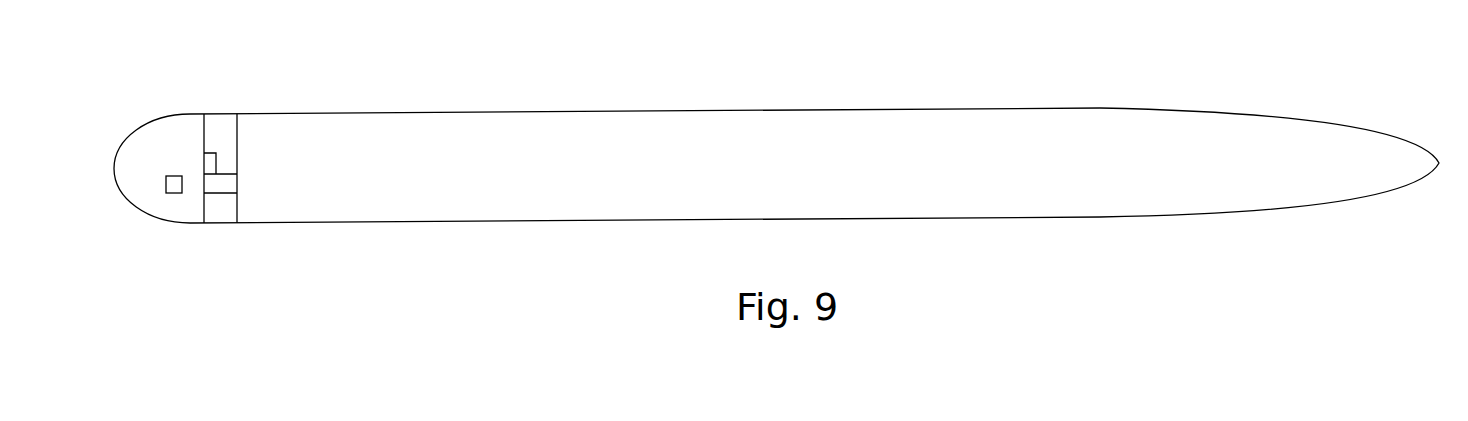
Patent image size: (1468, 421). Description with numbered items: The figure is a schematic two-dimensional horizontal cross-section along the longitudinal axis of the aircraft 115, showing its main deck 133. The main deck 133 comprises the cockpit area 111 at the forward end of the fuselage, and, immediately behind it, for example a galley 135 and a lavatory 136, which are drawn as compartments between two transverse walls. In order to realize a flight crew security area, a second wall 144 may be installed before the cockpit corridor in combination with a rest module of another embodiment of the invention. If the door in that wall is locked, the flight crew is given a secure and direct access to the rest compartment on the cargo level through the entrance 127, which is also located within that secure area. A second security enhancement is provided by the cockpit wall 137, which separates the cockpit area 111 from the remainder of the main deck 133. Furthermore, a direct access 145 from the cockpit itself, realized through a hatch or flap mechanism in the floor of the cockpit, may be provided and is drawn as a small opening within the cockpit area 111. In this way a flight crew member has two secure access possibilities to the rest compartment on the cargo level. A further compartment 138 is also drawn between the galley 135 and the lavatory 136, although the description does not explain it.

The cockpit area 111 is at (137, 127).
The aircraft 115 is at (1100, 100).
The entrance 127 is at (210, 152).
The main deck 133 is at (795, 133).
The galley 135 is at (228, 127).
The lavatory 136 is at (222, 210).
The cockpit wall 137 is at (204, 130).
The middle compartment 138 is at (225, 182).
The second wall 144 is at (237, 192).
The direct access 145 is at (174, 197).